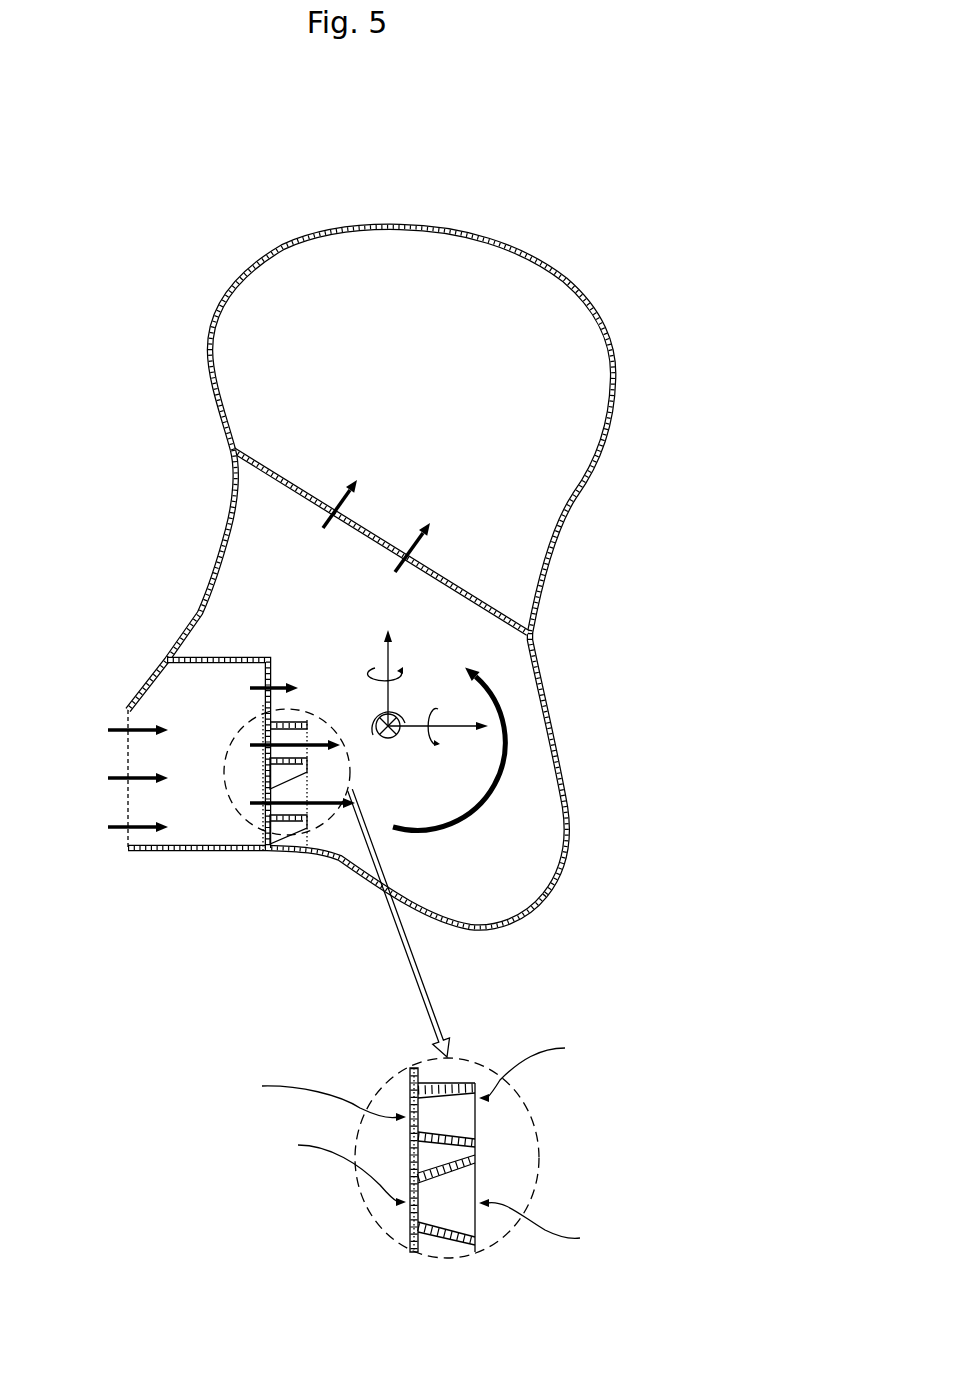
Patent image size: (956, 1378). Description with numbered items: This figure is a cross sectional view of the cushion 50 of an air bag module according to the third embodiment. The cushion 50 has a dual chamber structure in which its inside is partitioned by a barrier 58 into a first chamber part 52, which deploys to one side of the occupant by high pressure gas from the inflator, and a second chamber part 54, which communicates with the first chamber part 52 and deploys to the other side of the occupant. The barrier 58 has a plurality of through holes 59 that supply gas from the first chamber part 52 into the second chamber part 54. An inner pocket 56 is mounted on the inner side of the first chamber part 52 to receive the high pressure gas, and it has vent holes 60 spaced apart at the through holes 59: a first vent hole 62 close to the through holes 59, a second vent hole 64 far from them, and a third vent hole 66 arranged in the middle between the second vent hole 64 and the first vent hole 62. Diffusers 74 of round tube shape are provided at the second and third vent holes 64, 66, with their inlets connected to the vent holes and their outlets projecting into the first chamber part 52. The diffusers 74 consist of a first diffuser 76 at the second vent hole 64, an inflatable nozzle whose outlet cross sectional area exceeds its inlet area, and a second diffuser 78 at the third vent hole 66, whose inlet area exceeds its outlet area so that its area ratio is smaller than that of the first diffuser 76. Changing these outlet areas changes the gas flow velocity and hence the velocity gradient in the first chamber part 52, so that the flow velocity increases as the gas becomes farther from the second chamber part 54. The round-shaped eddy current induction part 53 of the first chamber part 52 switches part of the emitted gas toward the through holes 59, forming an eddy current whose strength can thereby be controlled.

The cushion 50 is at (367, 706).
The first chamber part 52 is at (537, 797).
The eddy current induction part 53 is at (550, 887).
The second chamber part 54 is at (488, 287).
The inner pocket 56 is at (152, 838).
The barrier 58 is at (512, 617).
The through holes 59 is at (360, 492).
The vent holes 60 is at (253, 823).
The first vent hole 62 is at (265, 693).
The second vent hole 64 is at (266, 822).
The third vent hole 66 is at (262, 758).
The diffusers 74 is at (416, 983).
The first diffuser 76 is at (307, 832).
The second diffuser 78 is at (307, 766).